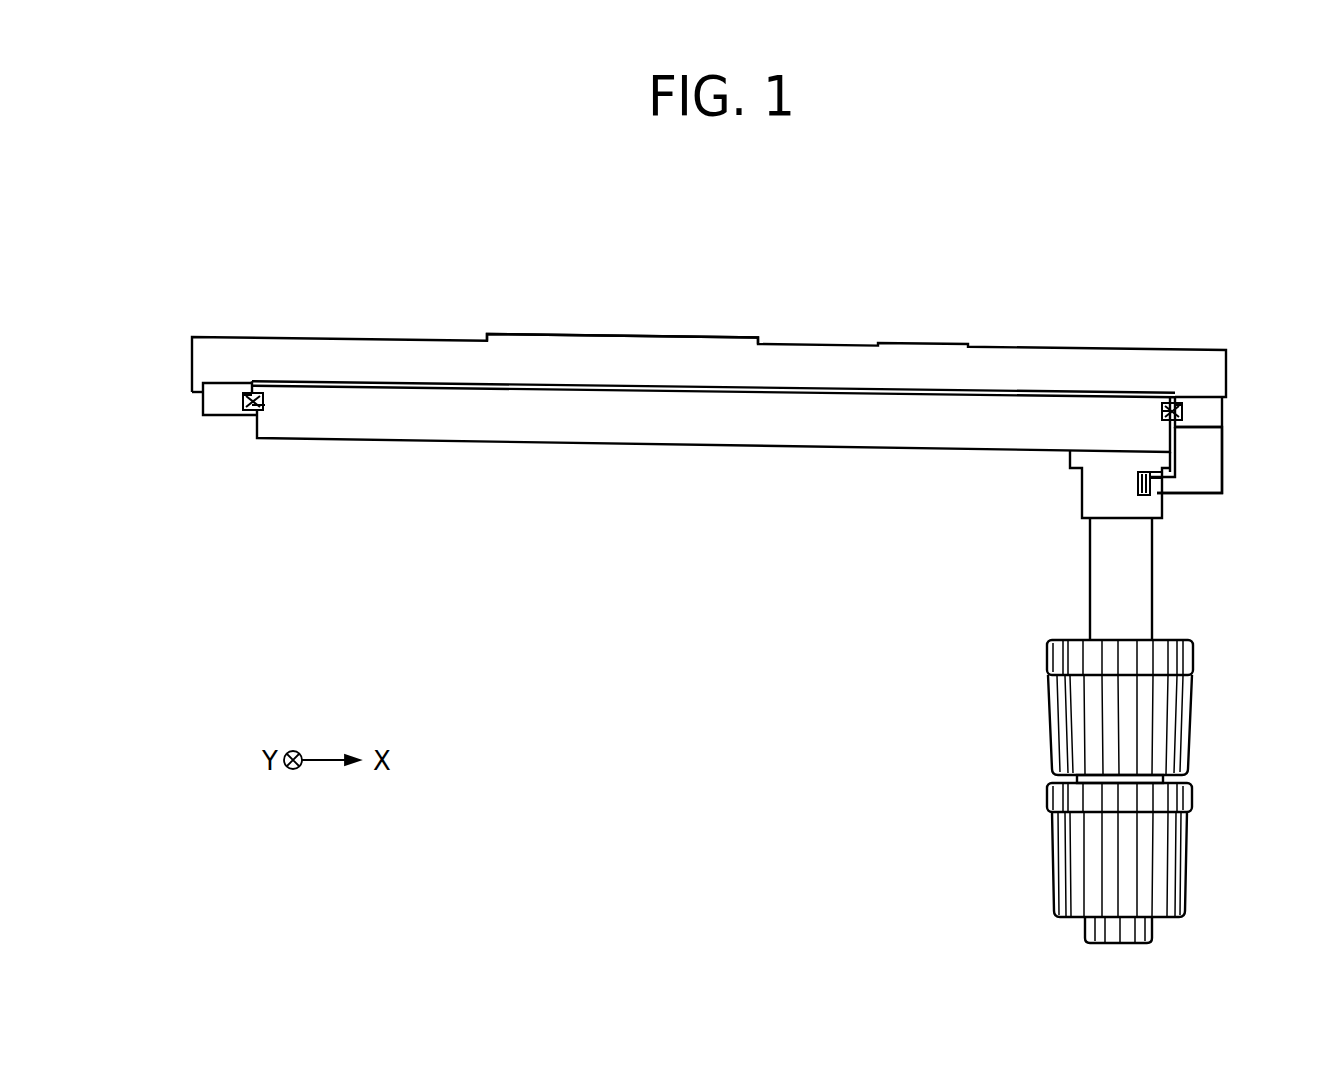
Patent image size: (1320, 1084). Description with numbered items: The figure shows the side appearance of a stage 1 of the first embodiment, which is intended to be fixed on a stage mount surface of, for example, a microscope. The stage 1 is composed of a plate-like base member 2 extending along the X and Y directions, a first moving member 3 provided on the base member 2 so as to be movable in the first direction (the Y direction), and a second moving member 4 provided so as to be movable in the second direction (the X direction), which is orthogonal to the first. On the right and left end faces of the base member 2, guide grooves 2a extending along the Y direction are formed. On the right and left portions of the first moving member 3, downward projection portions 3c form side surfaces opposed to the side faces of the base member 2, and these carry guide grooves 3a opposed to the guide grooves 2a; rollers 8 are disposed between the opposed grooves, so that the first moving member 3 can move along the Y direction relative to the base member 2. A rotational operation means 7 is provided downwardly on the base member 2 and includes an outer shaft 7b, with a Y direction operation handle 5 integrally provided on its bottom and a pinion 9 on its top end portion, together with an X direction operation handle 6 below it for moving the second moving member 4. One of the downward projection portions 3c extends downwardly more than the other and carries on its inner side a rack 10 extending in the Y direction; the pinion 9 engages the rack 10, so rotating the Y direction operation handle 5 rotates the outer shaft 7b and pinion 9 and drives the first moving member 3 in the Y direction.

The stage 1 is at (284, 232).
The base member 2 is at (893, 437).
The guide grooves 2a is at (265, 406).
The first moving member 3 is at (410, 352).
The guide grooves 3a is at (243, 397).
The downward projection portions 3c is at (215, 403).
The second moving member 4 is at (722, 340).
The Y direction operation handle 5 is at (1073, 722).
The X direction operation handle 6 is at (1075, 848).
The rotational operation means 7 is at (1093, 505).
The outer shaft 7b is at (1137, 607).
The rollers 8 is at (251, 412).
The pinion 9 is at (1143, 494).
The rack 10 is at (1160, 487).